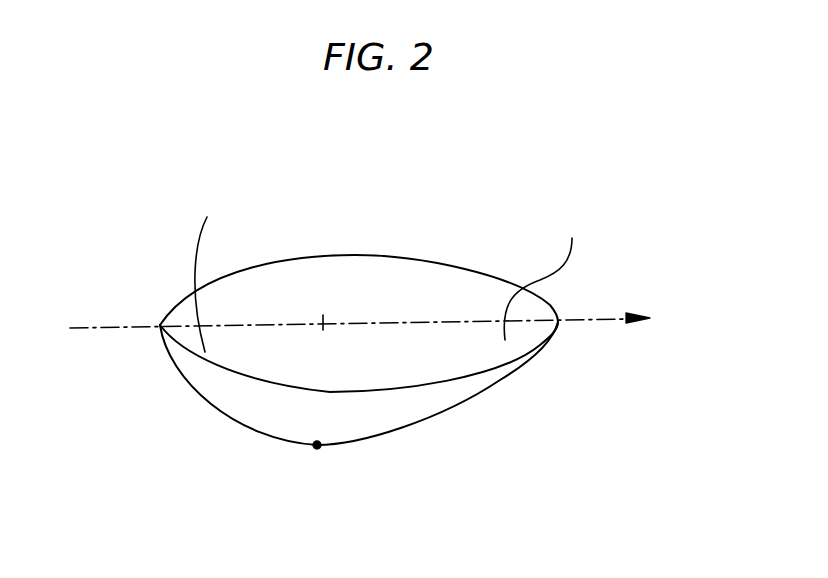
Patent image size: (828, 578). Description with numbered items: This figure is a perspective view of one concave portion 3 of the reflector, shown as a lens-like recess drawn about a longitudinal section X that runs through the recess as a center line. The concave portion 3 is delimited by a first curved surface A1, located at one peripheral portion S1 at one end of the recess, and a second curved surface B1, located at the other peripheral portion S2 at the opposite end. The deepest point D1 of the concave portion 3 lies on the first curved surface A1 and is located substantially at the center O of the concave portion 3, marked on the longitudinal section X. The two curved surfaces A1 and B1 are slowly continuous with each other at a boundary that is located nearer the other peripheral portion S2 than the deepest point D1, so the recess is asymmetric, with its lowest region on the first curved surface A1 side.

The concave portion 3 is at (423, 259).
The longitudinal section X is at (372, 317).
The center O is at (335, 308).
The second curved surface B1 is at (214, 272).
The first curved surface A1 is at (548, 272).
The other peripheral portion S2 is at (150, 287).
The one peripheral portion S1 is at (578, 340).
The deepest point D1 is at (317, 445).